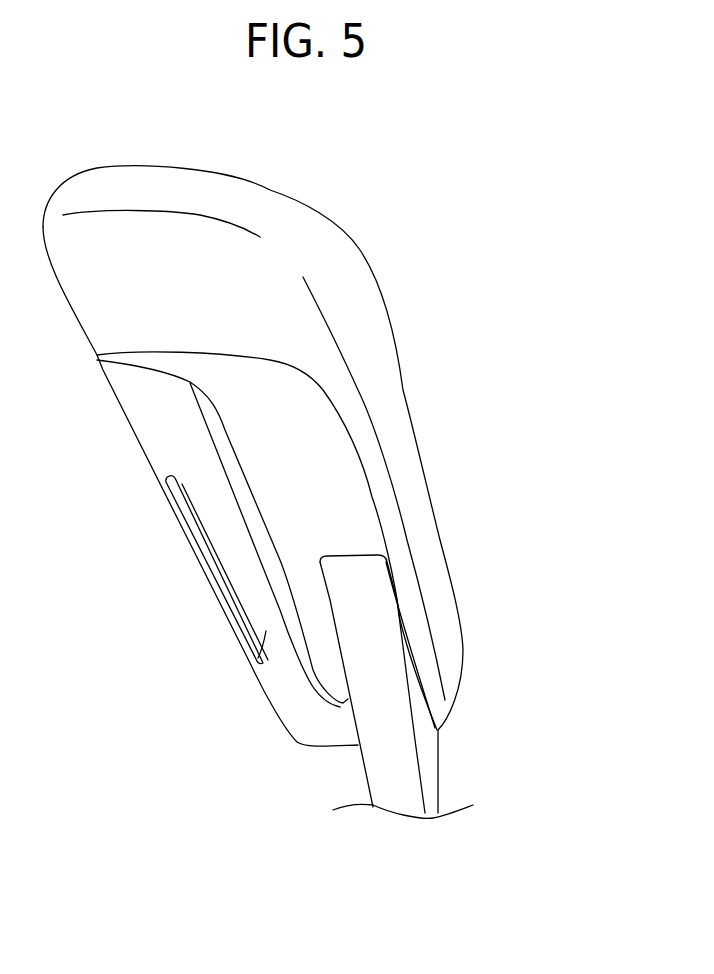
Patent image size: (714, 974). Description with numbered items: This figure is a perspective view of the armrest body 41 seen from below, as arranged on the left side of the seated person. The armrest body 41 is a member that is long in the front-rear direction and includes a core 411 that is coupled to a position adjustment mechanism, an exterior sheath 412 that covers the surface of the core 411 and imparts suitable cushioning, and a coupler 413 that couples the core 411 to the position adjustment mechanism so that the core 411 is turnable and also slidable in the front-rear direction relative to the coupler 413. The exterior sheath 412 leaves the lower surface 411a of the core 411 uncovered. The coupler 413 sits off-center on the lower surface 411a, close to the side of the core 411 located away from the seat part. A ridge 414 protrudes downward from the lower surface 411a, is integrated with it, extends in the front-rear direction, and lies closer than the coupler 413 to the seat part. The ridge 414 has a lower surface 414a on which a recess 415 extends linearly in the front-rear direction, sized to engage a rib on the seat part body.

The armrest body 41 is at (508, 630).
The core 411 is at (348, 490).
The lower surface 411a is at (290, 402).
The exterior sheath 412 is at (403, 428).
The coupler 413 is at (370, 603).
The ridge 414 is at (157, 447).
The lower surface 414a is at (258, 653).
The recess 415 is at (203, 540).